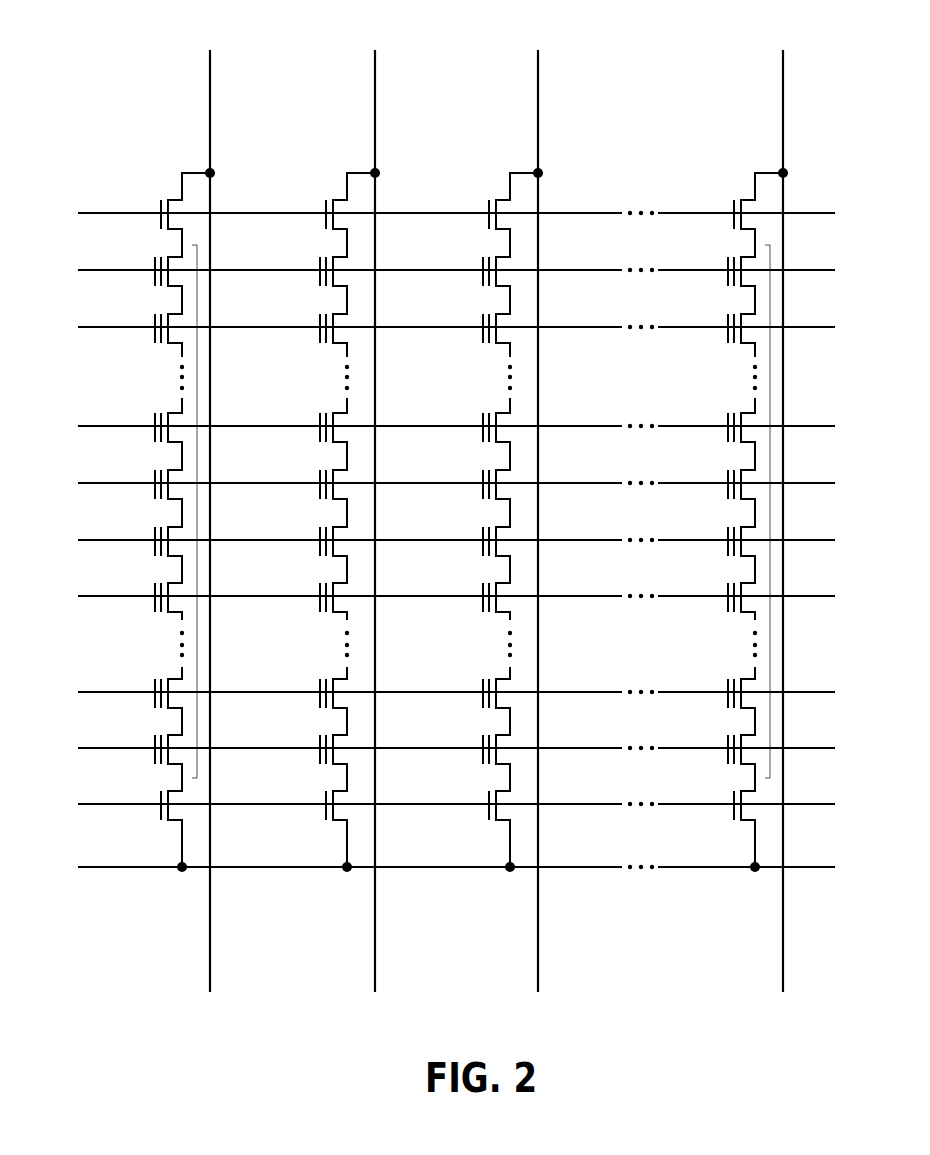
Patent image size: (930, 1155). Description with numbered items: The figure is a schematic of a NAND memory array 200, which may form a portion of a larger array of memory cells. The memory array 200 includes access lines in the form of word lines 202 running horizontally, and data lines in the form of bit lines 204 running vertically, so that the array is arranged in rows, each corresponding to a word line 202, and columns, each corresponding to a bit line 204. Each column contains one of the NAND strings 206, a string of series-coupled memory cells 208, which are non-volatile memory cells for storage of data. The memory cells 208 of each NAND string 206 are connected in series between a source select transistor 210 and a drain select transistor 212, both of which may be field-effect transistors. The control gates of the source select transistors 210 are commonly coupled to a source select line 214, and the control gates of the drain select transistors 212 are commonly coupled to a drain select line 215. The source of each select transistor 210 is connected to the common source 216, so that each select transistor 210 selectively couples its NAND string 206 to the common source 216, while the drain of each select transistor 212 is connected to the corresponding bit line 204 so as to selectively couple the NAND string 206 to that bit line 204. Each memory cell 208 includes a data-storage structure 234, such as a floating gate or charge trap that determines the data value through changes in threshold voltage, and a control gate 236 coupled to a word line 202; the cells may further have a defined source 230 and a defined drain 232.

The NAND memory array 200 is at (690, 49).
The bit lines 204 is at (213, 97).
The word lines 202 is at (118, 268).
The drain select line 215 is at (695, 211).
The source select line 214 is at (686, 802).
The common source 216 is at (140, 869).
The NAND strings 206 is at (200, 512).
The memory cells 208 is at (166, 288).
The drain select transistors 212 is at (178, 198).
The source select transistors 210 is at (171, 822).
The data-storage structure 234 is at (488, 258).
The control gate 236 is at (483, 285).
The drain 232 is at (512, 245).
The source 230 is at (512, 298).